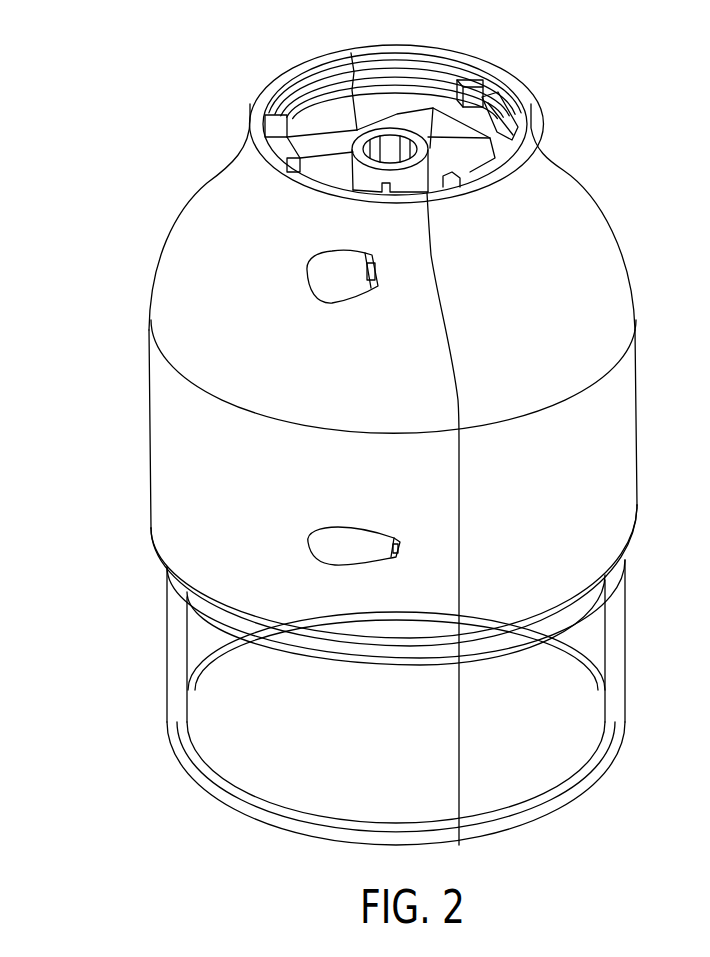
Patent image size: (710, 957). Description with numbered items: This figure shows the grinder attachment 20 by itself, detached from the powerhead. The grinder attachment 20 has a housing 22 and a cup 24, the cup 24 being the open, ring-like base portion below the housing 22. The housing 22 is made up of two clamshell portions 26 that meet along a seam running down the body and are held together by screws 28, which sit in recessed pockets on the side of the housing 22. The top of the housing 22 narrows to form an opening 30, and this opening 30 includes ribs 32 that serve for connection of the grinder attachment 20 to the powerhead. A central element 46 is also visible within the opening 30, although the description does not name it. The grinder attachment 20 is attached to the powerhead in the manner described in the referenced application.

The grinder attachment 20 is at (657, 700).
The housing 22 is at (618, 411).
The cup 24 is at (177, 650).
The clamshell portions 26 is at (208, 205).
The screws 28 is at (372, 276).
The opening 30 is at (443, 107).
The ribs 32 is at (300, 97).
The central tube 46 is at (397, 150).